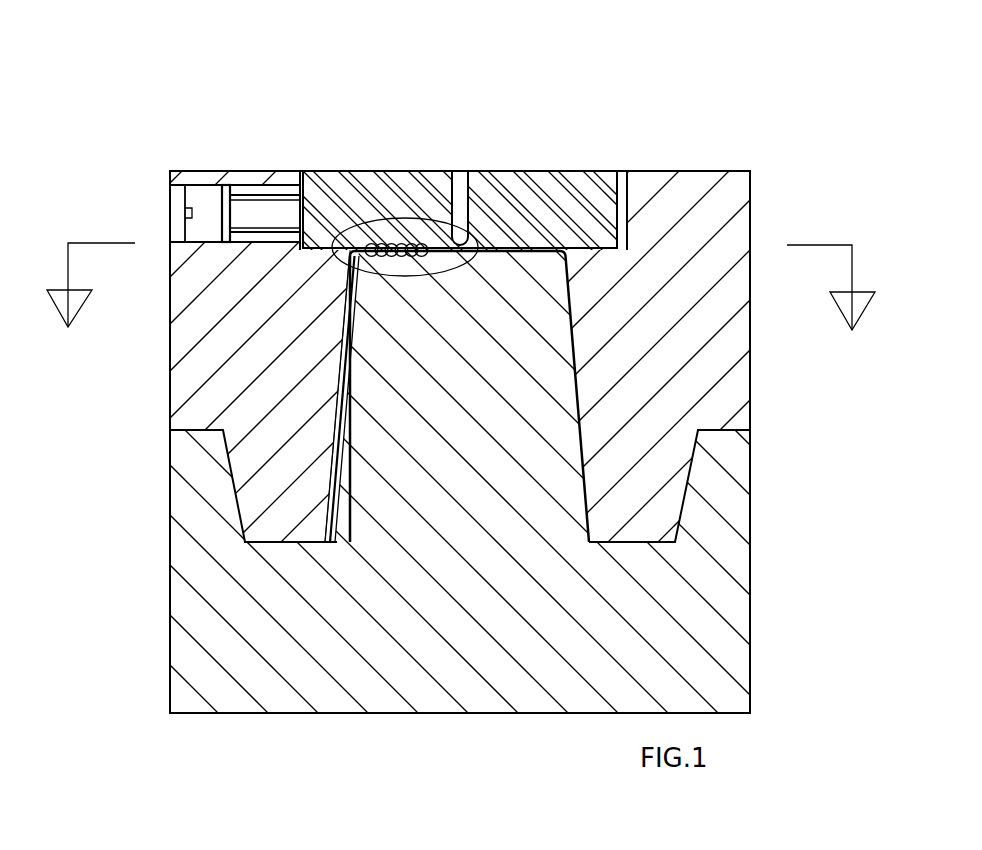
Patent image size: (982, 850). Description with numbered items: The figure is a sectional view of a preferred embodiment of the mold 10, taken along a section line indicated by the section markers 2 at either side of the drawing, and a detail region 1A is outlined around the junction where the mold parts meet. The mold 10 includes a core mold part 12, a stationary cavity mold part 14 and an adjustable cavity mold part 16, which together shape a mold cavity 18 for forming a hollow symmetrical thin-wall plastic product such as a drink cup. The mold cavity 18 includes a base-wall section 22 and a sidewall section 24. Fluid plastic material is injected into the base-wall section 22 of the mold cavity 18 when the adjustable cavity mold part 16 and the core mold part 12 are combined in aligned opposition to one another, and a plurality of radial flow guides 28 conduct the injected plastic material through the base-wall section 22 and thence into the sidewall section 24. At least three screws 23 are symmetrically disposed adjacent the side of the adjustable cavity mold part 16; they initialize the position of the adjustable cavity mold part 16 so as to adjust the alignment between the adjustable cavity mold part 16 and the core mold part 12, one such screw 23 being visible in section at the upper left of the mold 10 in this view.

The mold 10 is at (754, 166).
The core mold part 12 is at (170, 537).
The stationary cavity mold part 14 is at (170, 392).
The adjustable cavity mold part 16 is at (497, 170).
The mold cavity 18 is at (574, 358).
The base-wall section 22 is at (532, 247).
The screws 23 is at (207, 212).
The sidewall section 24 is at (347, 330).
The radial flow guides 28 is at (387, 225).
The detail region 1A is at (355, 225).
The section line 2- 2 is at (460, 286).